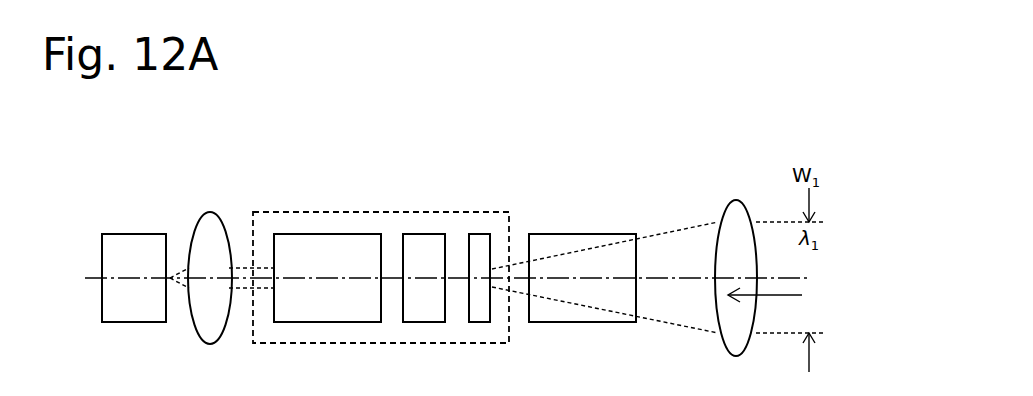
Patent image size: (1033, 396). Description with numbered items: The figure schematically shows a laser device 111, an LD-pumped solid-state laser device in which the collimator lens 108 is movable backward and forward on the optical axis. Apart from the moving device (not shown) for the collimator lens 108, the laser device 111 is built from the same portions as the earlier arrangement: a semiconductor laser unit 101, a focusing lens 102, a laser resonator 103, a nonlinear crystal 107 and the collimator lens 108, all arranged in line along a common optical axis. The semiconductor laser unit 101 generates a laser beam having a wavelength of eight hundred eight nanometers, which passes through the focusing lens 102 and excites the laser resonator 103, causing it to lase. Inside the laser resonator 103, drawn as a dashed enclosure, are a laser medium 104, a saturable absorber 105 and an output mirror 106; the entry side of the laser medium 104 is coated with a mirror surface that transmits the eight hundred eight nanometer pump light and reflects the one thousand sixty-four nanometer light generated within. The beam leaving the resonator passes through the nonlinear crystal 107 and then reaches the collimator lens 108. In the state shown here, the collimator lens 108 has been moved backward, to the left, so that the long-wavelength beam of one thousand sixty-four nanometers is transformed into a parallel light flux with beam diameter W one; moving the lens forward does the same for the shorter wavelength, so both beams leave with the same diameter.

The semiconductor laser unit 101 is at (130, 250).
The focusing lens 102 is at (208, 233).
The laser resonator 103 is at (278, 212).
The laser medium 104 is at (335, 240).
The saturable absorber 105 is at (427, 240).
The output mirror 106 is at (477, 240).
The nonlinear crystal 107 is at (594, 248).
The collimator lens 108 is at (732, 220).
The laser device 111 is at (377, 173).